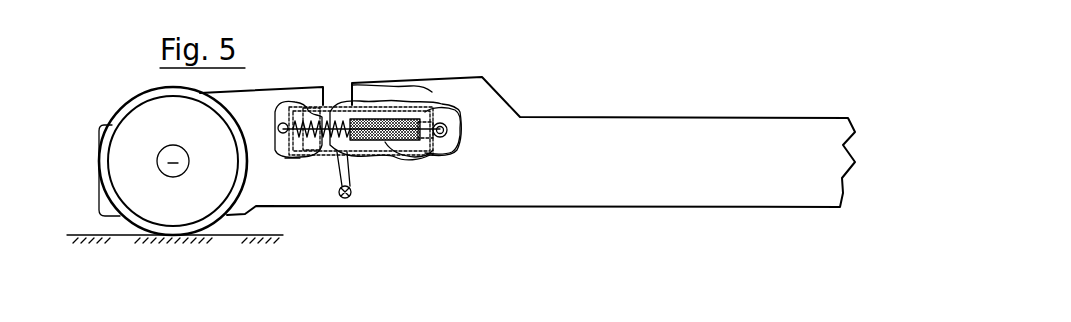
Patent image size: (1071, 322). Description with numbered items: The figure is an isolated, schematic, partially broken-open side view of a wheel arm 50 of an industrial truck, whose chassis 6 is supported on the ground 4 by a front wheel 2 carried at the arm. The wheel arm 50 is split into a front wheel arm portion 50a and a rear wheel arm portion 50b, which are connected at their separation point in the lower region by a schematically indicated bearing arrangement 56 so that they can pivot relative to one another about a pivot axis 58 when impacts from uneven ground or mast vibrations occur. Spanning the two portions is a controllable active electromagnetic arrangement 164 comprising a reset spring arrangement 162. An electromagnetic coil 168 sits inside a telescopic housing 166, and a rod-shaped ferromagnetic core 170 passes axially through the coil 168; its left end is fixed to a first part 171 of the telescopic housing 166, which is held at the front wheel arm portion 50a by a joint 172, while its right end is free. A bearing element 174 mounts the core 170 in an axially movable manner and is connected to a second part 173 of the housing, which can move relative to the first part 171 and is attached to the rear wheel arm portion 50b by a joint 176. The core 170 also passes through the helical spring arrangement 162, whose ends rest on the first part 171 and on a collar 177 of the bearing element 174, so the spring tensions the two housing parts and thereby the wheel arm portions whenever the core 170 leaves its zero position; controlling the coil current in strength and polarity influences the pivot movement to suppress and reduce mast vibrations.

The front wheel 2 is at (132, 148).
The ground 4 is at (83, 222).
The chassis 6 is at (603, 143).
The wheel arm 50 is at (425, 108).
The front wheel arm portion 50a is at (302, 178).
The rear wheel arm portion 50b is at (435, 197).
The bearing arrangement 56 is at (351, 192).
The pivot axis 58 is at (347, 198).
The reset spring arrangement 162 is at (318, 157).
The electromagnetic arrangement 164 is at (432, 85).
The telescopic housing 166 is at (453, 113).
The electromagnetic coil 168 is at (373, 150).
The ferromagnetic core 170 is at (353, 110).
The first part of the telescopic housing 171 is at (300, 158).
The joint 172 is at (277, 108).
The second part of the telescopic housing 173 is at (453, 150).
The bearing element 174 is at (460, 105).
The joint 176 is at (447, 130).
The collar 177 is at (364, 61).